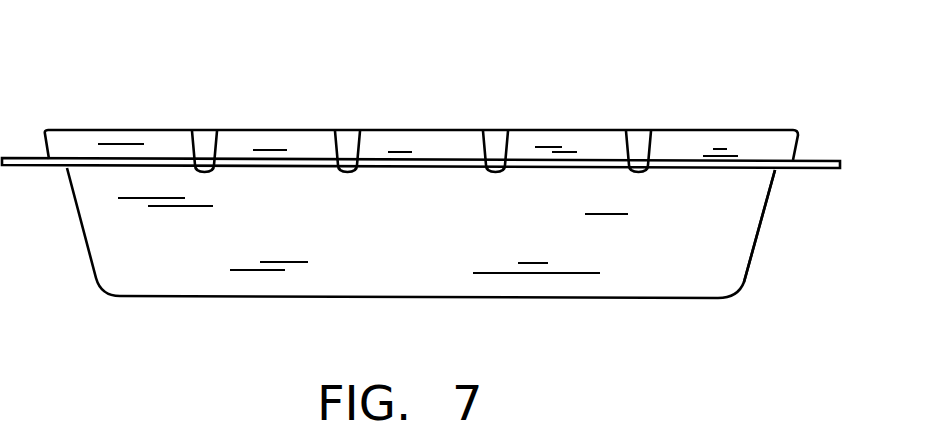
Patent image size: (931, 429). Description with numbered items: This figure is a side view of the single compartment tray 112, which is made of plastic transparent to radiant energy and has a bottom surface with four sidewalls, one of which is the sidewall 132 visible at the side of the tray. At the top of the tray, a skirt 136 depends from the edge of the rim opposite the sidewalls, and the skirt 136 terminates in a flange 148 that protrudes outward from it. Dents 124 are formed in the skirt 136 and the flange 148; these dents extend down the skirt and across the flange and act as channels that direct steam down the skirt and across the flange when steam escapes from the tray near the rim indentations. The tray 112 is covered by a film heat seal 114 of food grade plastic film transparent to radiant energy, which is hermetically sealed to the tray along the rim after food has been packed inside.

The tray 112 is at (168, 274).
The film heat seal 114 is at (133, 131).
The dents 124 is at (345, 143).
The sidewall 132 is at (692, 260).
The skirt 136 is at (428, 143).
The flange 148 is at (818, 160).